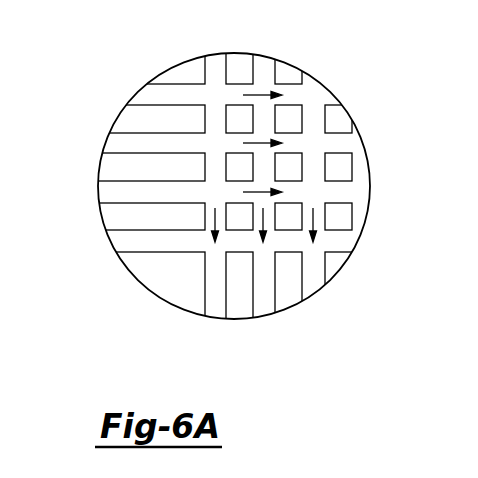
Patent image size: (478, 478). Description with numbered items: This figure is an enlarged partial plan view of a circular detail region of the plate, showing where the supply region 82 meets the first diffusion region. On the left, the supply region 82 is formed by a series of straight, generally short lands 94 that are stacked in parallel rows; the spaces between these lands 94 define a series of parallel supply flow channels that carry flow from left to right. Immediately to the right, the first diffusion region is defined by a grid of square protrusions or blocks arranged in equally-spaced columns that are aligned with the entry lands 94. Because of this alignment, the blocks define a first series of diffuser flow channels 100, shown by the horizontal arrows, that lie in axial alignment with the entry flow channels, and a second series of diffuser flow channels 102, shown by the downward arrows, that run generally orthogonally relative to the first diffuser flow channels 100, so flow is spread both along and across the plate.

The supply region 82 is at (158, 94).
The lands 94 is at (170, 129).
The first diffuser flow channels 100 is at (290, 98).
The second diffuser flow channels 102 is at (313, 283).